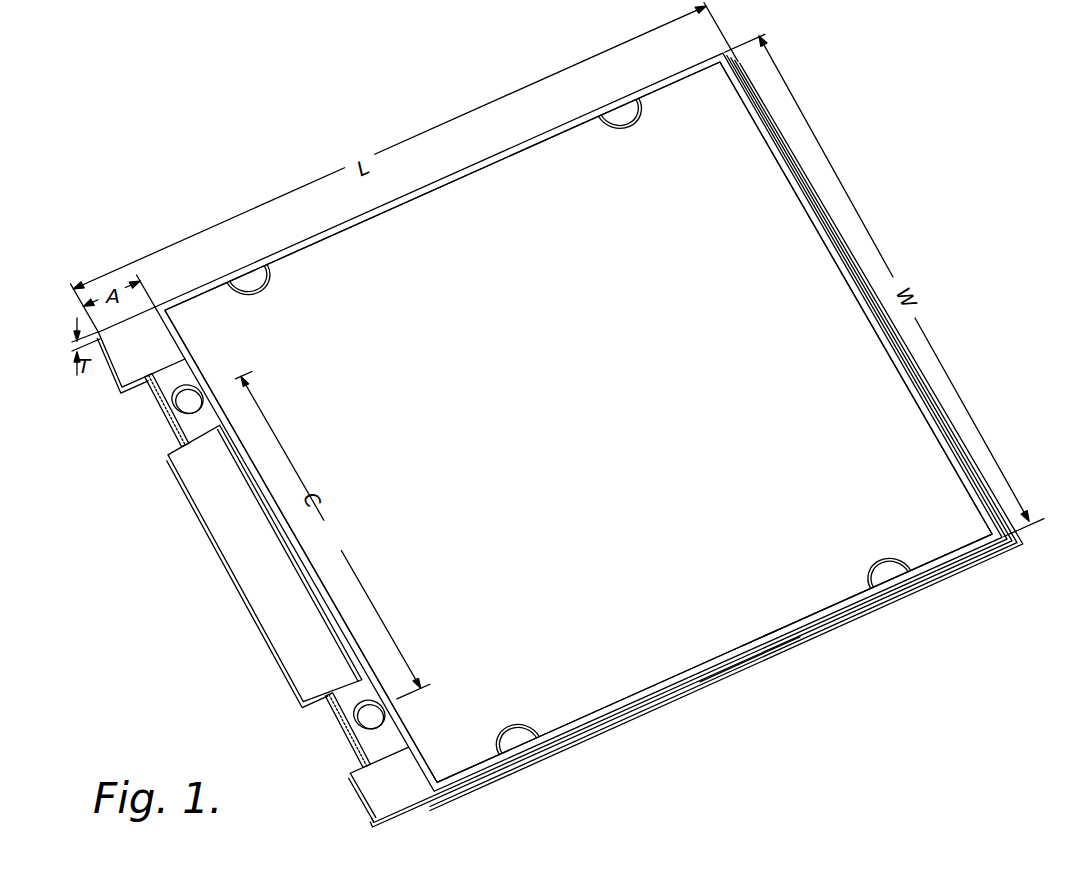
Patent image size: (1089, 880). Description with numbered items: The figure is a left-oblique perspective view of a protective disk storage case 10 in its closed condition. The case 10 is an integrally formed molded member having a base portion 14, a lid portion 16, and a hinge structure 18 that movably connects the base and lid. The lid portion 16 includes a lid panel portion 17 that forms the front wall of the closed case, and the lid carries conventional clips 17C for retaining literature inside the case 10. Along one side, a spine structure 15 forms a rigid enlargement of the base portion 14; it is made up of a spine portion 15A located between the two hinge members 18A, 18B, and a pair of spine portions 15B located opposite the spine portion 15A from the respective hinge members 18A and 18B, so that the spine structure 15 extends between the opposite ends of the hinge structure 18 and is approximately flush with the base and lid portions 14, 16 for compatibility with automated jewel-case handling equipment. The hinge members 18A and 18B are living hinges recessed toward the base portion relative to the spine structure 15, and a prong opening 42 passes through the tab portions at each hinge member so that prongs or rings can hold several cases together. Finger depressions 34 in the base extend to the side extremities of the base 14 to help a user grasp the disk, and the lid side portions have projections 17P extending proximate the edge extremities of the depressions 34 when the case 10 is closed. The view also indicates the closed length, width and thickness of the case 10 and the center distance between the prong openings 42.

The storage case 10 is at (222, 684).
The base portion 14 is at (1005, 547).
The spine structure 15 is at (276, 590).
The spine portion 15A is at (282, 568).
The spine portions 15B is at (160, 356).
The lid portion 16 is at (338, 228).
The lid panel portion 17 is at (612, 477).
The clips 17C is at (641, 114).
The projections 17P is at (756, 661).
The hinge structure 18 is at (234, 589).
The hinge member 18A is at (170, 424).
The hinge member 18B is at (347, 729).
The finger depressions 34 is at (712, 678).
The prong opening 42 is at (194, 386).